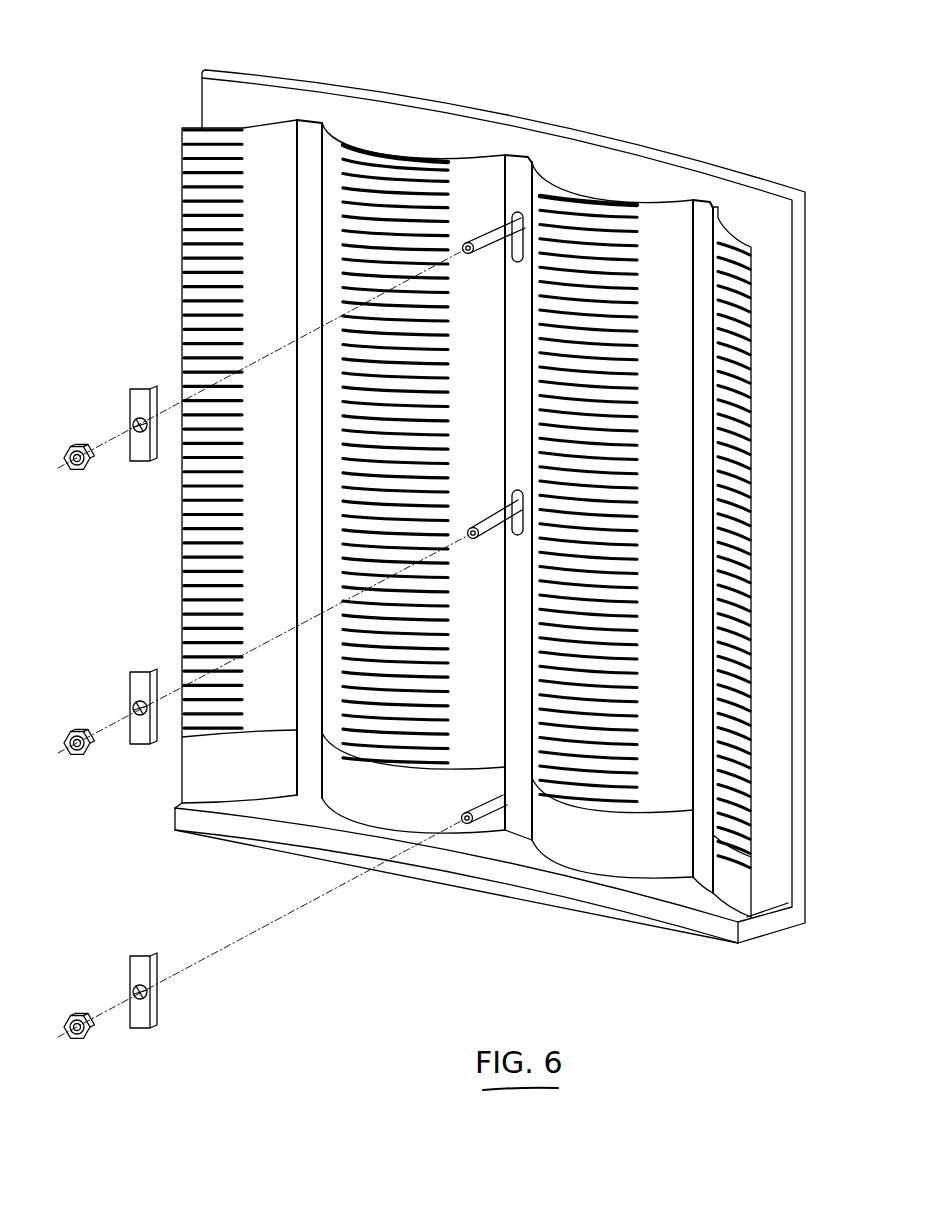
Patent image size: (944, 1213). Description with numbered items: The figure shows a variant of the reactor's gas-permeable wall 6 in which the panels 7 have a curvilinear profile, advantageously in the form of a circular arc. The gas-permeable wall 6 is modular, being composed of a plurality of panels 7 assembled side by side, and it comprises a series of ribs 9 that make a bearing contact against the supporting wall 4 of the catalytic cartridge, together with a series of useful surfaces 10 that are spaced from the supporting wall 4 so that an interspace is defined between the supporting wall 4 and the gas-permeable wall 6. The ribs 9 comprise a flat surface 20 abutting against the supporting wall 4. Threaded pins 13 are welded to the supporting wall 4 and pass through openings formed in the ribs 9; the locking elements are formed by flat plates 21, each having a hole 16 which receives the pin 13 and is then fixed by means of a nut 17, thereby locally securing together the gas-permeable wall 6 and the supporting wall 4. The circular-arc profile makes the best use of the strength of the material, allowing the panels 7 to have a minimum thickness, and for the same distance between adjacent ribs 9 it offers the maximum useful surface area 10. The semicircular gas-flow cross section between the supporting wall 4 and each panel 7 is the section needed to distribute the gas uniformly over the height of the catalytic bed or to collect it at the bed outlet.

The supporting wall 4 is at (780, 340).
The gas-permeable wall 6 is at (762, 493).
The panel 7 is at (378, 134).
The rib 9 is at (512, 150).
The useful surface 10 is at (613, 194).
The threaded pin 13 is at (490, 232).
The hole 16 is at (140, 434).
The nut 17 is at (77, 452).
The flat surface 20 is at (518, 175).
The flat plate 21 is at (140, 405).